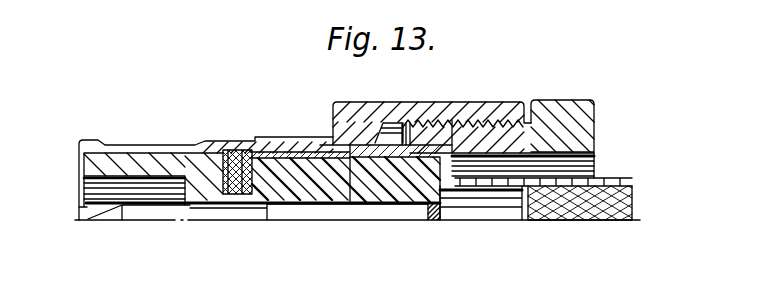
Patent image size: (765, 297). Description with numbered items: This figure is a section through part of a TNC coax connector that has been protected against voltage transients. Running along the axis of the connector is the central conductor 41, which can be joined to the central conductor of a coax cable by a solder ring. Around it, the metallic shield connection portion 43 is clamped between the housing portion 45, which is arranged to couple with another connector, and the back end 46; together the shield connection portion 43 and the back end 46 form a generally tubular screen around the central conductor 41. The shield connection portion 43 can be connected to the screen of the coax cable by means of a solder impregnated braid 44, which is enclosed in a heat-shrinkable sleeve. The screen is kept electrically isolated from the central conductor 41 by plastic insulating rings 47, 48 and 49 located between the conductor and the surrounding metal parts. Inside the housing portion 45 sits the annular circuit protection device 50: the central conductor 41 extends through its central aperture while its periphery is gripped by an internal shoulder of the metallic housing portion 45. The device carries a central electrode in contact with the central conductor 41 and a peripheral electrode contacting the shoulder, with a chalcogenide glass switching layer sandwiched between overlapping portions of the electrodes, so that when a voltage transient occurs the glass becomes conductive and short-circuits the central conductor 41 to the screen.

The central conductor 41 is at (146, 216).
The shield connection portion 43 is at (423, 143).
The solder impregnated braid 44 is at (610, 197).
The housing portion 45 is at (333, 108).
The back end 46 is at (583, 123).
The plastic insulating ring 47 is at (140, 160).
The plastic insulating ring 48 is at (320, 183).
The plastic insulating ring 49 is at (398, 192).
The annular circuit protection device 50 is at (229, 151).